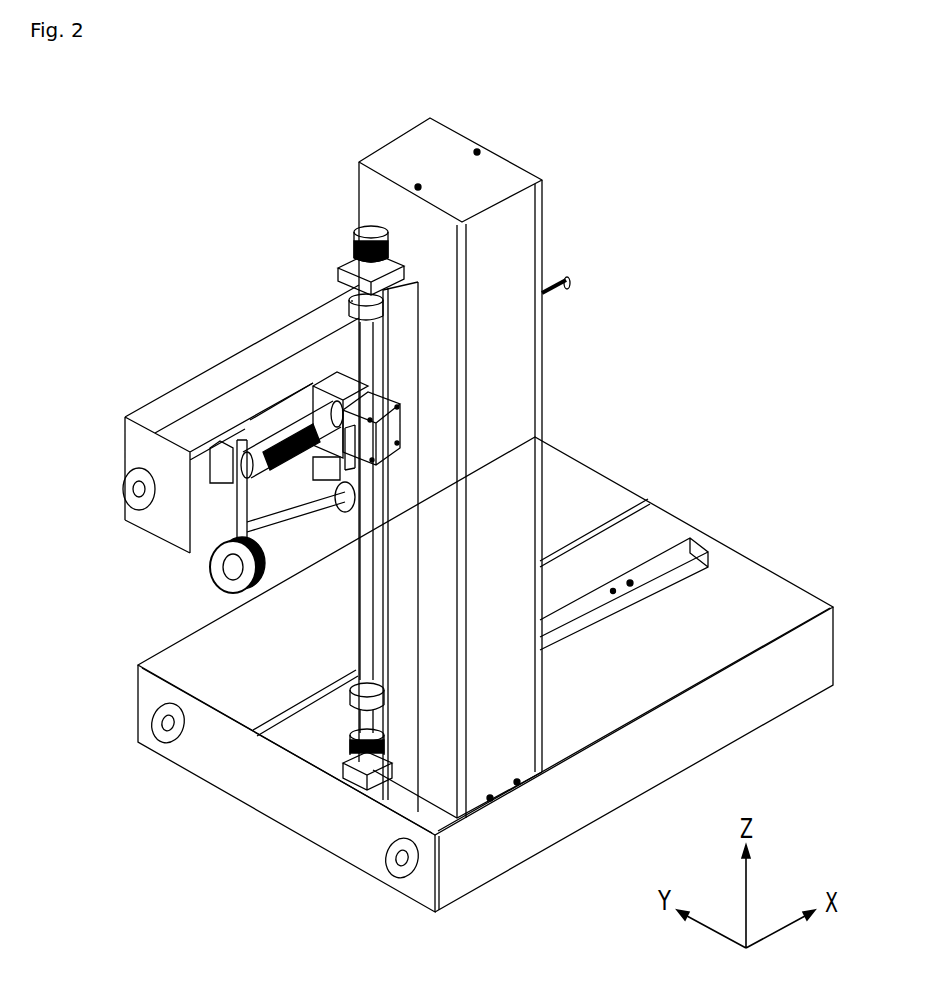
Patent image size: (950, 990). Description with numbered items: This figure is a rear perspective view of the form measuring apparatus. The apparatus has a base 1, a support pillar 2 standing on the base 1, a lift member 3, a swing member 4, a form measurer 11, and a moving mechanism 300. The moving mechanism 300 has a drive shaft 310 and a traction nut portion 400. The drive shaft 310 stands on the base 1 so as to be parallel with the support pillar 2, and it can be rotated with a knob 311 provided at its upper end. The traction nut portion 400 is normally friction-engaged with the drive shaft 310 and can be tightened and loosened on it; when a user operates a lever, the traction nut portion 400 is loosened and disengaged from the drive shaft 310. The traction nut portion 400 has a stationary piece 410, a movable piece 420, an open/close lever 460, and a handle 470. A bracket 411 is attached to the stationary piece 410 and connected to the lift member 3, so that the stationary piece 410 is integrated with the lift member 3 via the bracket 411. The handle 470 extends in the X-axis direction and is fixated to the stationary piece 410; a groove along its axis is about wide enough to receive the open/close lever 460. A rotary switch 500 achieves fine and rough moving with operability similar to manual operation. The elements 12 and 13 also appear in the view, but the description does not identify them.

The base 1 is at (770, 587).
The support pillar 2 is at (513, 172).
The lift member 3 is at (392, 395).
The swing member 4 is at (380, 330).
The form measurer 11 is at (213, 388).
The pin 12 is at (553, 275).
The pin head 13 is at (573, 293).
The moving mechanism 300 is at (290, 201).
The drive shaft 310 is at (342, 305).
The knob 311 is at (357, 228).
The traction nut portion 400 is at (405, 423).
The stationary piece 410 is at (316, 400).
The bracket 411 is at (323, 383).
The movable piece 420 is at (367, 443).
The open/close lever 460 is at (282, 473).
The handle 470 is at (287, 427).
The rotary switch 500 is at (125, 497).